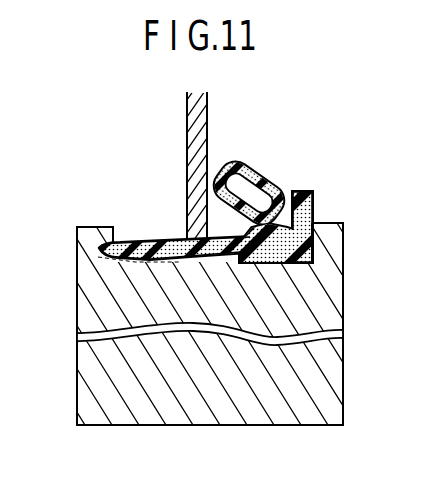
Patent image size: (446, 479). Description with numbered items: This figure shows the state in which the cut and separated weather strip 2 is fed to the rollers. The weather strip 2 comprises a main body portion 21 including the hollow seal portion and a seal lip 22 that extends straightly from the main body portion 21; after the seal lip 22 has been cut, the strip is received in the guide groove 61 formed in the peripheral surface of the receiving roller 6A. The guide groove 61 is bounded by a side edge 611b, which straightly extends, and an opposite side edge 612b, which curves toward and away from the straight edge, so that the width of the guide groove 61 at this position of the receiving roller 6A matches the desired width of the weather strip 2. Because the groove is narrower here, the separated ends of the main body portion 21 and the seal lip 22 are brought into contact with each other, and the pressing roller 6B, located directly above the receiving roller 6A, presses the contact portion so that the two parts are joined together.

The weather strip 2 is at (275, 177).
The main body portion 21 is at (297, 192).
The seal lip 22 is at (153, 240).
The receiving roller 6A is at (101, 307).
The pressing roller 6B is at (200, 152).
The guide groove 61 is at (186, 250).
The side edge of guide groove 611b is at (312, 242).
The side edge of guide groove 612b is at (110, 225).